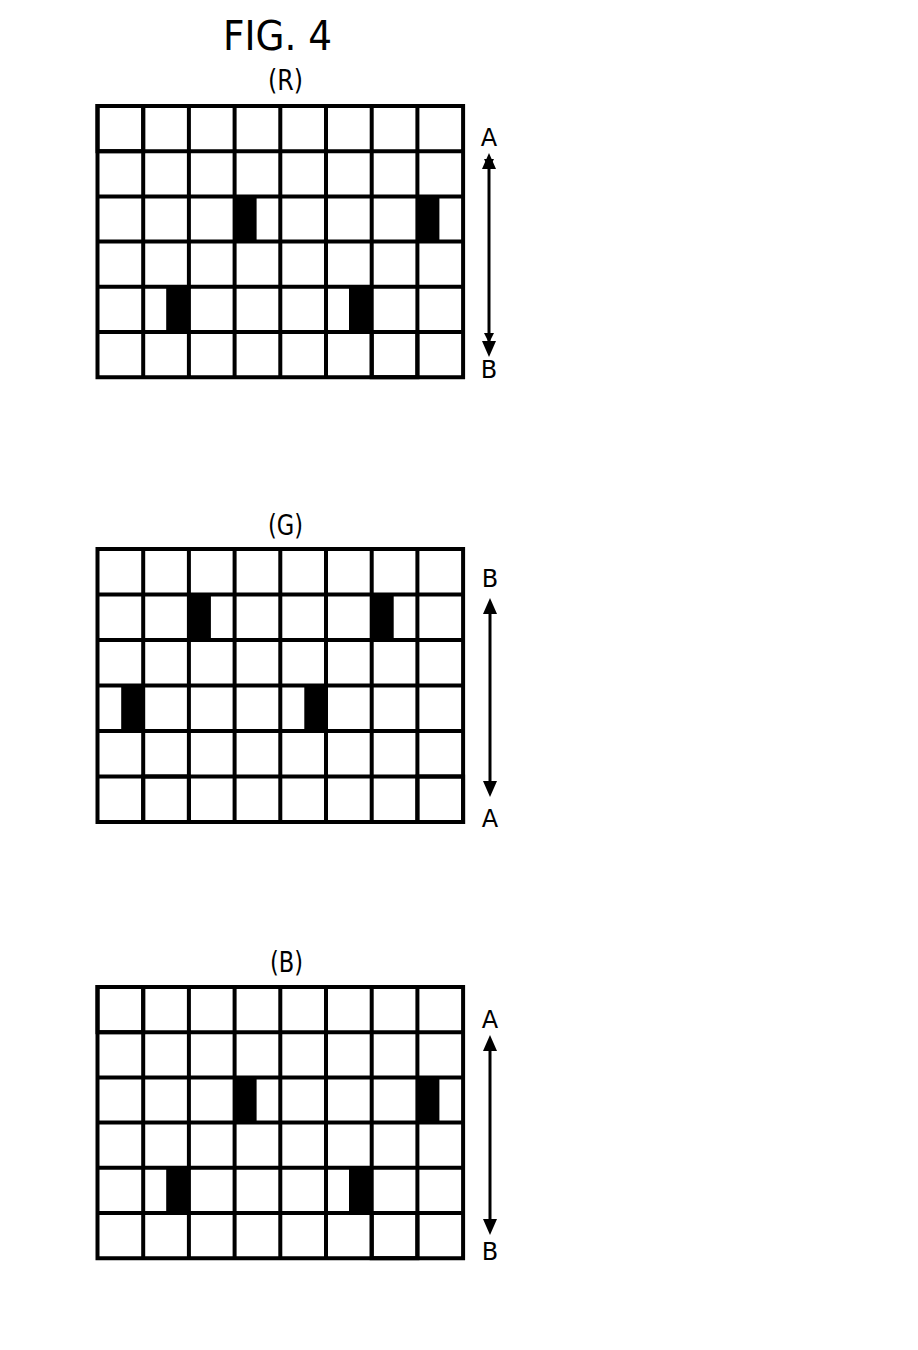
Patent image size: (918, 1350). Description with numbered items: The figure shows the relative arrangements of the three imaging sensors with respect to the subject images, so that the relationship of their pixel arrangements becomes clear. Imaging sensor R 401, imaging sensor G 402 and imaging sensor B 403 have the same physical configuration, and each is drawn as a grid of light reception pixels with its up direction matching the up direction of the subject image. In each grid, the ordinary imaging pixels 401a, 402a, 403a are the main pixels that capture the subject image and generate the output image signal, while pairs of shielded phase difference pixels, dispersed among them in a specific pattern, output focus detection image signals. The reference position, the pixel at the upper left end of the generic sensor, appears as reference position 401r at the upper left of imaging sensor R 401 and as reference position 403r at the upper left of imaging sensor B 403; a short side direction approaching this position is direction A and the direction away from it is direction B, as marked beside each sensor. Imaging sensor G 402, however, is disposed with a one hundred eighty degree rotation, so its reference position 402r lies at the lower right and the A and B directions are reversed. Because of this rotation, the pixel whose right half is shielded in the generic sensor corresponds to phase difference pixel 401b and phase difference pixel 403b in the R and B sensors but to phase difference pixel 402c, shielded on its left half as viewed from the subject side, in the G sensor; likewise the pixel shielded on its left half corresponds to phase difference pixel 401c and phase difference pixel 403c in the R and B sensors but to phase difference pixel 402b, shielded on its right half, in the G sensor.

The imaging sensor R 401 is at (215, 377).
The reference position 401r is at (128, 122).
The imaging pixel 401a is at (399, 357).
The phase difference pixel 401b is at (170, 332).
The phase difference pixel 401c is at (256, 242).
The imaging sensor G 402 is at (215, 822).
The reference position 402r is at (433, 800).
The imaging pixel 402a is at (160, 810).
The phase difference pixel 402b is at (322, 732).
The phase difference pixel 402c is at (380, 642).
The imaging sensor B 403 is at (215, 1260).
The reference position 403r is at (122, 1003).
The imaging pixel 403a is at (397, 1238).
The phase difference pixel 403b is at (170, 1213).
The phase difference pixel 403c is at (247, 1123).